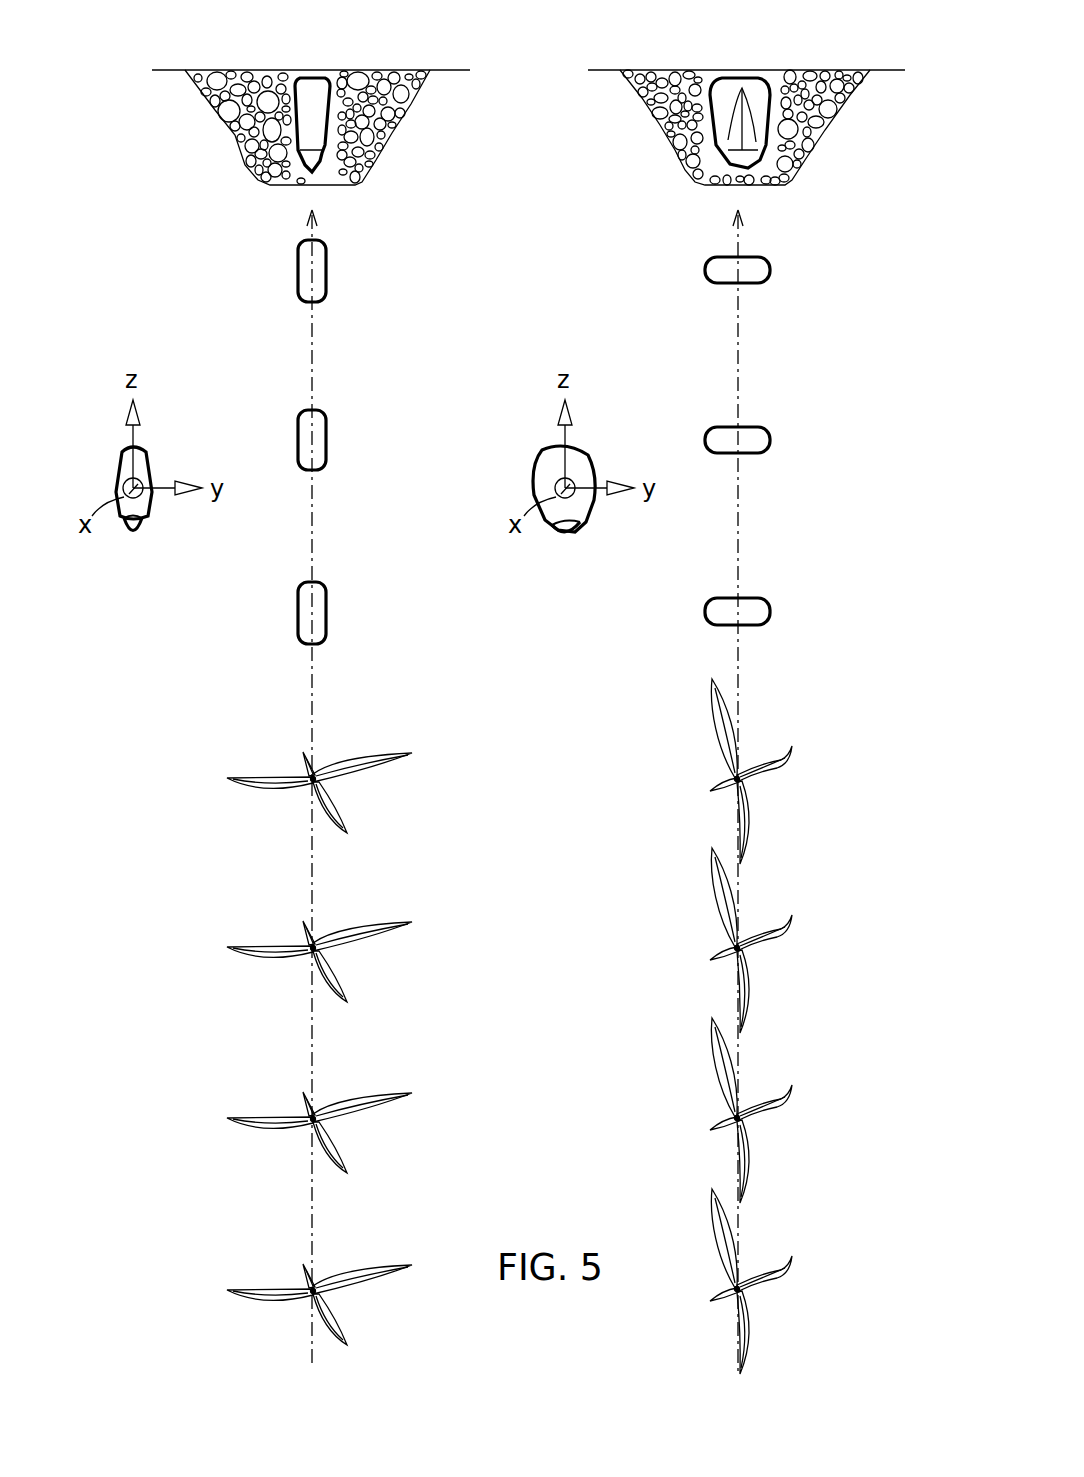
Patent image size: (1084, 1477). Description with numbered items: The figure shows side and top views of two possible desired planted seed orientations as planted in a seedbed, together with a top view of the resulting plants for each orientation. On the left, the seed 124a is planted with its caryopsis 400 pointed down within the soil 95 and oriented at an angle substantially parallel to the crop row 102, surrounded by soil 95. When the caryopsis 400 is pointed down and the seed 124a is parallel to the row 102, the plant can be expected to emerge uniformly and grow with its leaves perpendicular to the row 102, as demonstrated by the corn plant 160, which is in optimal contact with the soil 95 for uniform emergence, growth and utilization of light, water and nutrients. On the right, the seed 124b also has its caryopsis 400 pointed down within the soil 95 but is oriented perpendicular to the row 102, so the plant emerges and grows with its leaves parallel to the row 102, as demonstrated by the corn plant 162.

The seed 124a is at (296, 75).
The seed 124b is at (762, 73).
The caryopsis 400 is at (287, 150).
The soil 95 is at (285, 173).
The crop row 102 is at (312, 660).
The corn plant 160 is at (258, 778).
The corn plant 162 is at (797, 752).